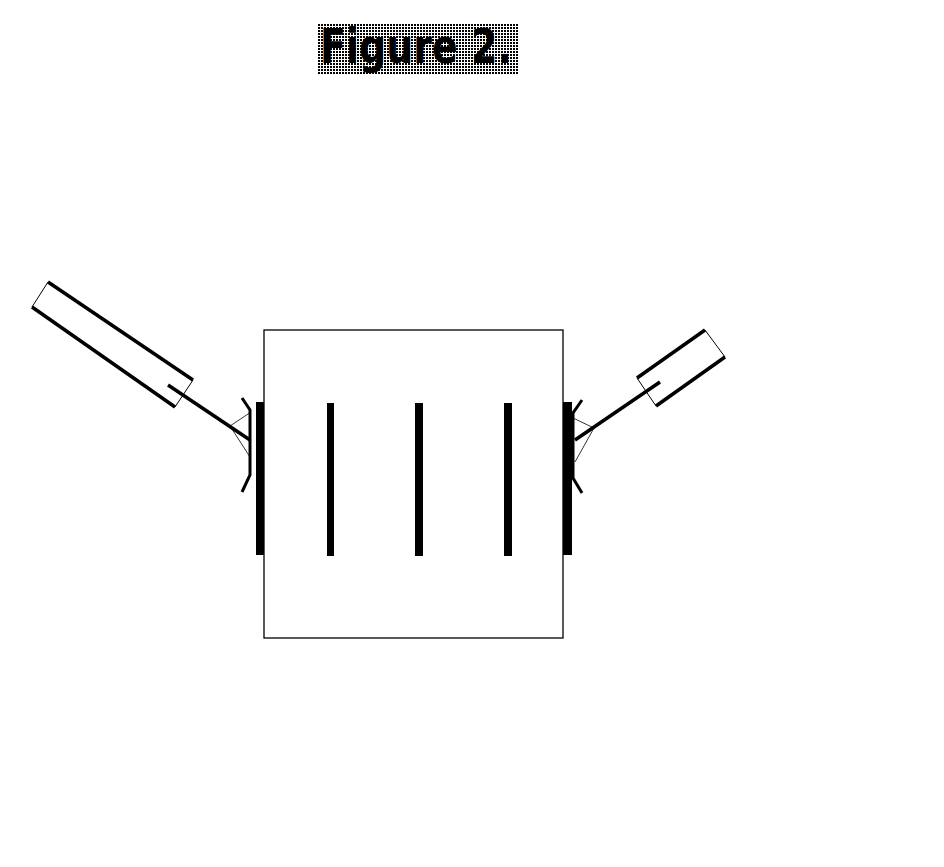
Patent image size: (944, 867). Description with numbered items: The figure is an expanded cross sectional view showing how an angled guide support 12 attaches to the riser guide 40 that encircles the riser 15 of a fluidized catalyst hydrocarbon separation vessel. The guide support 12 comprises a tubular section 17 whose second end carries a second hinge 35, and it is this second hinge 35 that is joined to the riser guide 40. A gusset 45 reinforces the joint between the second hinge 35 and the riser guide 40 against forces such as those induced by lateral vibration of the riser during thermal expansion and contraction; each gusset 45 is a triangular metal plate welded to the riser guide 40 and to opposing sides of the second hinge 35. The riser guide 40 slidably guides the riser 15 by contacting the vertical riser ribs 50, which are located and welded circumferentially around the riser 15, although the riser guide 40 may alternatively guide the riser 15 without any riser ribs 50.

The guide support 12 is at (734, 471).
The riser 15 is at (464, 610).
The tubular section 17 is at (705, 357).
The second hinge 35 is at (607, 415).
The riser guide 40 is at (575, 465).
The gusset 45 is at (583, 423).
The riser rib 50 is at (568, 537).